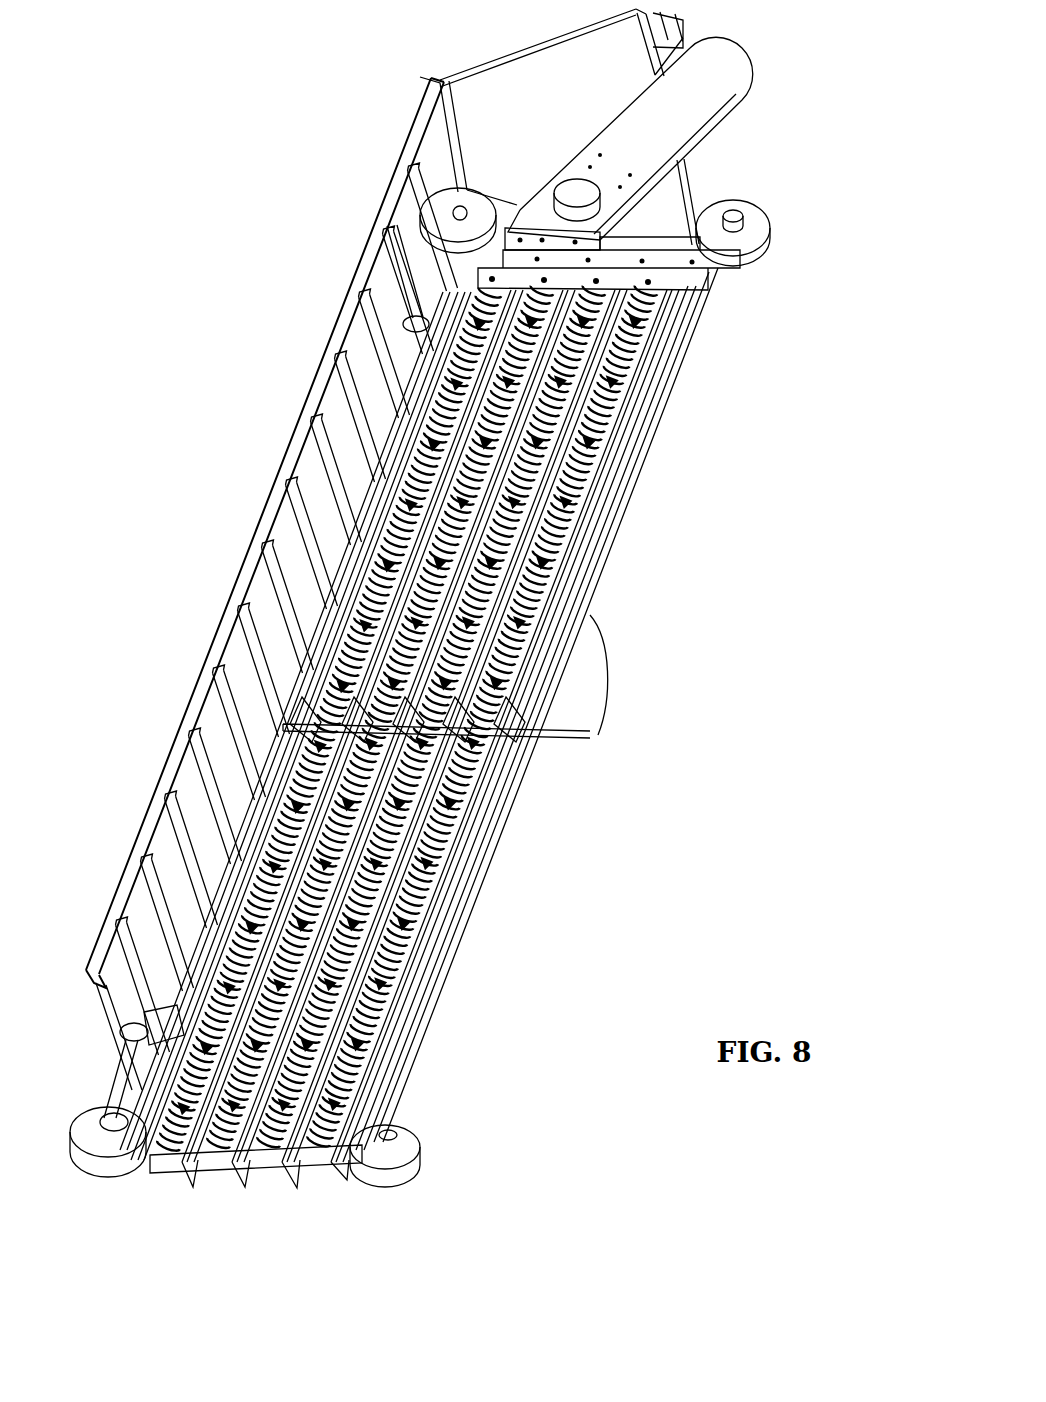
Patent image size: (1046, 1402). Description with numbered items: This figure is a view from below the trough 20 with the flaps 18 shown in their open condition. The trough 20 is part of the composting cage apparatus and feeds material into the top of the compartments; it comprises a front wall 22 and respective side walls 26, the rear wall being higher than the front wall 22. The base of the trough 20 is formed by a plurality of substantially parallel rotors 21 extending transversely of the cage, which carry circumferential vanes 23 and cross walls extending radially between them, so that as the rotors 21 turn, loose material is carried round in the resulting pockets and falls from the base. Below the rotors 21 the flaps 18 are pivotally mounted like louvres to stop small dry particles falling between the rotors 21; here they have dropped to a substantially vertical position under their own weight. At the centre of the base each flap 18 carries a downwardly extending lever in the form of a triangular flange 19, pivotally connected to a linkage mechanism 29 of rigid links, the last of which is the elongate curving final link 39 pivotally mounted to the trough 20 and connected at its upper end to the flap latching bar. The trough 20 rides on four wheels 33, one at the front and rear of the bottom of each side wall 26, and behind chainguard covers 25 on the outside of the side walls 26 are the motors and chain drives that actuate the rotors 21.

The flaps 18 is at (633, 407).
The triangular flange 19 is at (403, 745).
The trough 20 is at (266, 418).
The rotors 21 is at (217, 1167).
The front wall 22 is at (268, 589).
The circumferential vanes 23 is at (400, 963).
The chainguard covers 25 is at (602, 143).
The side walls 26 is at (483, 100).
The linkage mechanism 29 is at (440, 748).
The wheels 33 is at (432, 214).
The final link 39 is at (593, 648).